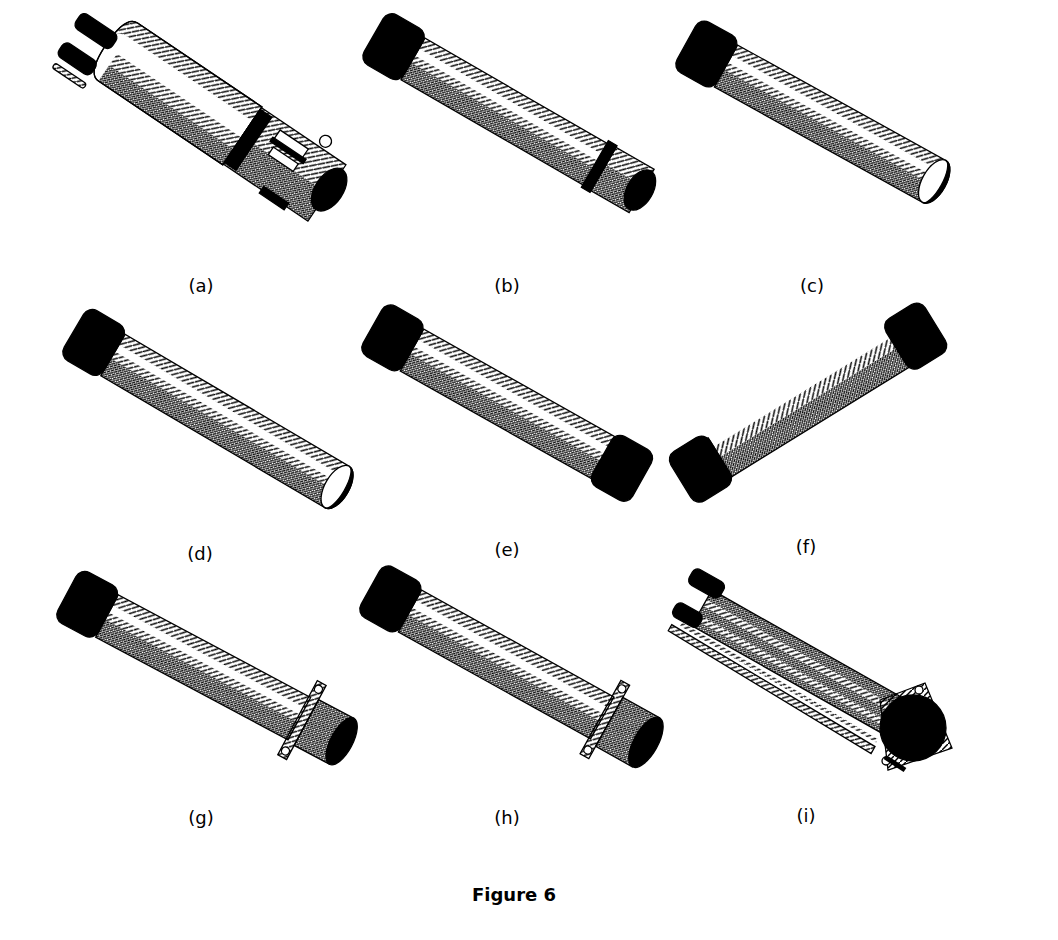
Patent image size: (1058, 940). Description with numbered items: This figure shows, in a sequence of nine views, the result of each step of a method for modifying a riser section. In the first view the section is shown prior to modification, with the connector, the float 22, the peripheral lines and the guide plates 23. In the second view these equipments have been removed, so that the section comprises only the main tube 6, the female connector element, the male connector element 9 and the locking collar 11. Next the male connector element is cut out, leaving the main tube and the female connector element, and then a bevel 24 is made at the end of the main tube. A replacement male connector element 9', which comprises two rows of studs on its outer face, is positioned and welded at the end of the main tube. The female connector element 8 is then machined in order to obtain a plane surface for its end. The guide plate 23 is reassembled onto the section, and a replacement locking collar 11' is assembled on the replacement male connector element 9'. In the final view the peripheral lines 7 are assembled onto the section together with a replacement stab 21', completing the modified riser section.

The main tube 6 is at (500, 105).
The peripheral lines 7 is at (782, 695).
The female connector element 8 is at (732, 487).
The male connector element 9 is at (507, 172).
The replacement male connector element 9' is at (540, 479).
The locking collar 11 is at (544, 208).
The replacement locking collar 11' is at (538, 744).
The replacement stab 21' is at (867, 737).
The float 22 is at (163, 107).
The guide plates 23 is at (280, 188).
The bevel 24 is at (318, 488).